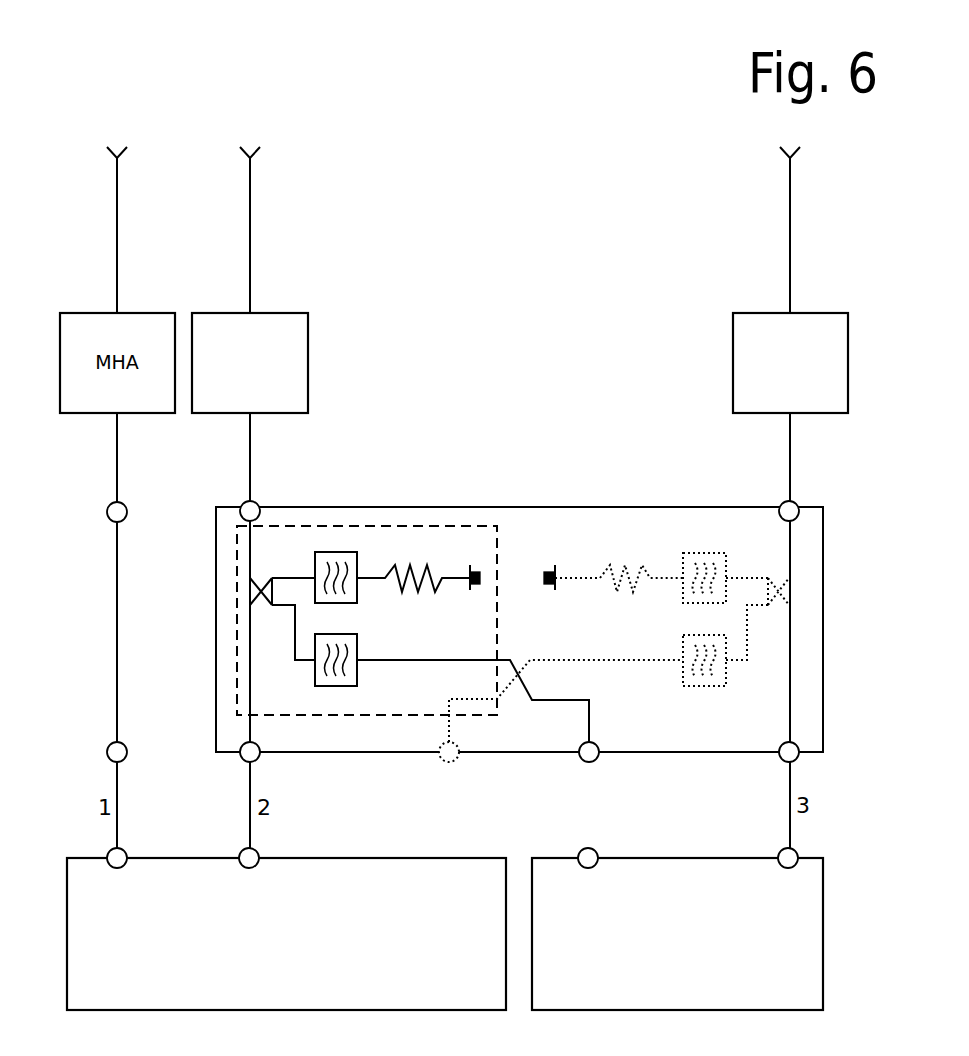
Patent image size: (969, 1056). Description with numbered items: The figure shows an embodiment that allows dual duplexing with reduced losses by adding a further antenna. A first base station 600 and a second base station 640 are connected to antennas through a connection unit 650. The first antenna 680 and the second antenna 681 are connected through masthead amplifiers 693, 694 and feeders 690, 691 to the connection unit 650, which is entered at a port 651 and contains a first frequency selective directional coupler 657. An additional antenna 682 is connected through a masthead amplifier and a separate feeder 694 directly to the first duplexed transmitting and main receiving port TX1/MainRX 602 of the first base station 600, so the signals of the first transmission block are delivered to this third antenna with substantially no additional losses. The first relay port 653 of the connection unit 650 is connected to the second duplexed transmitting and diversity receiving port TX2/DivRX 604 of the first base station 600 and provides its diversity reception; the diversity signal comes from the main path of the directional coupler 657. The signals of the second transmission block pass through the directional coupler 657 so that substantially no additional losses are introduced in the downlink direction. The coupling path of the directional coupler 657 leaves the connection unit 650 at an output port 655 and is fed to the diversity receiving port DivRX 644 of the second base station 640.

The first base station 600 is at (500, 855).
The second base station 640 is at (820, 855).
The first duplexed transmitting and main receiving port TX1/MainRX 602 is at (124, 850).
The second duplexed transmitting and diversity receiving port TX2/DivRX 604 is at (256, 850).
The diversity receiving port DivRX 644 is at (597, 850).
The connection unit 650 is at (823, 507).
The port of the connection unit 651 is at (258, 503).
The first relay port 653 is at (242, 760).
The output port of the connection unit 655 is at (597, 745).
The first frequency selective directional coupler 657 is at (237, 621).
The first antenna 680 is at (250, 242).
The second antenna 681 is at (790, 240).
The additional antenna 682 is at (117, 242).
The feeder 690 is at (250, 446).
The feeder 691 is at (790, 445).
The masthead amplifier 693 is at (805, 313).
The masthead amplifier / separate feeder 694 is at (300, 313).